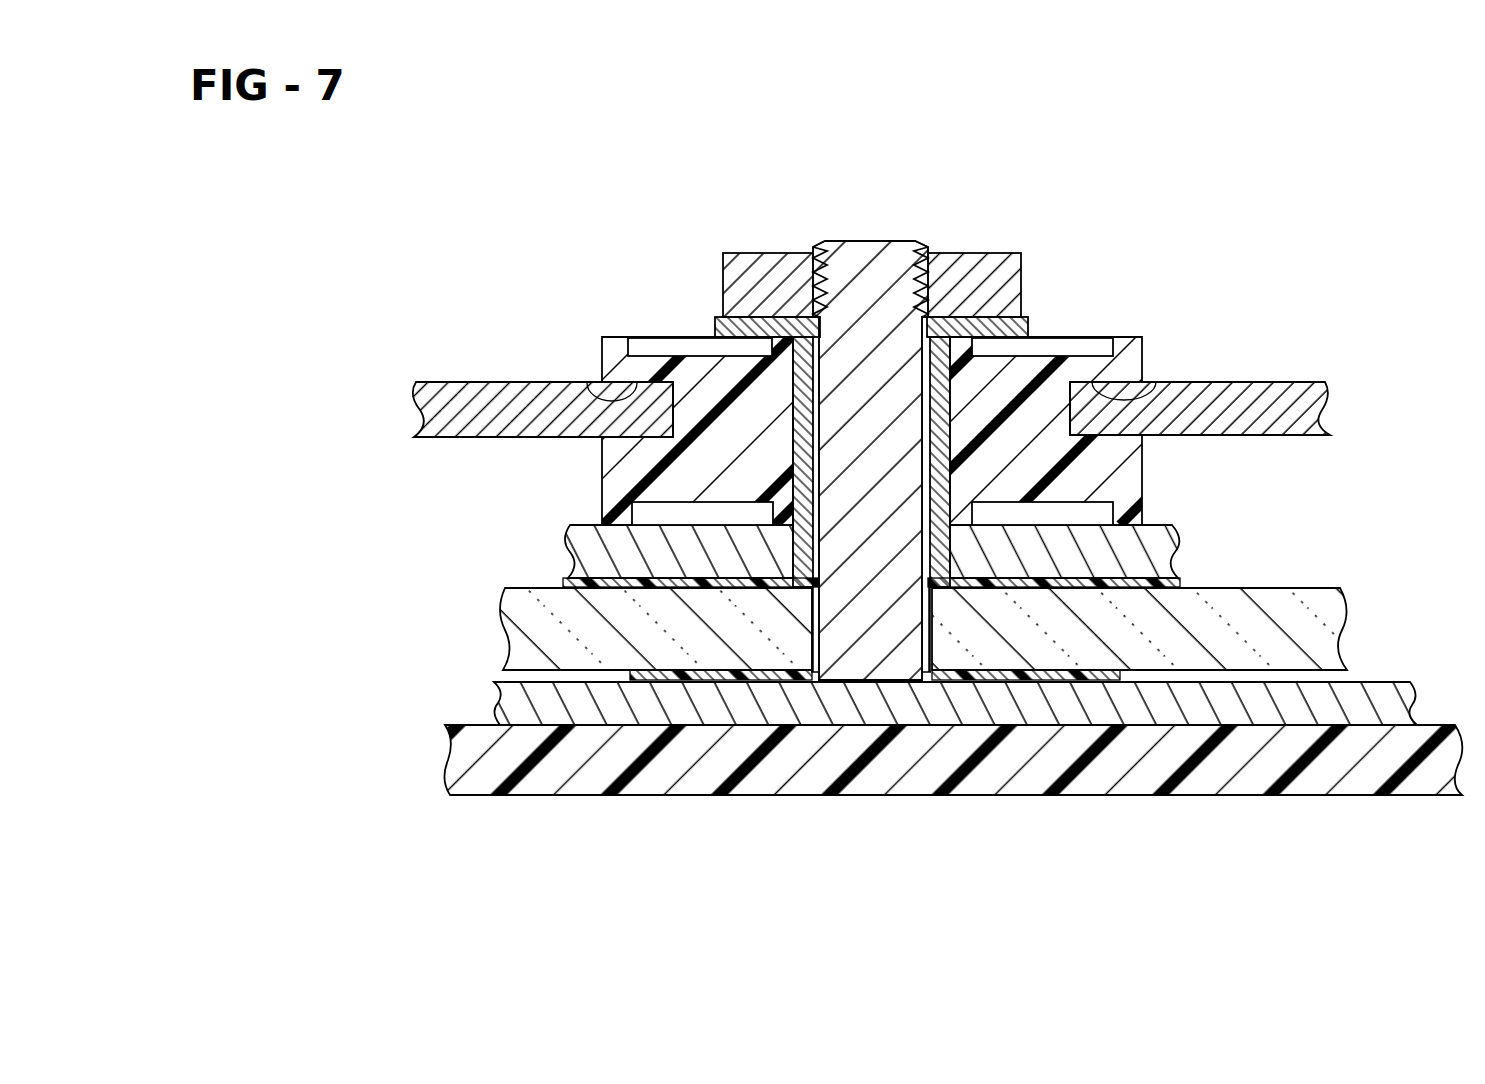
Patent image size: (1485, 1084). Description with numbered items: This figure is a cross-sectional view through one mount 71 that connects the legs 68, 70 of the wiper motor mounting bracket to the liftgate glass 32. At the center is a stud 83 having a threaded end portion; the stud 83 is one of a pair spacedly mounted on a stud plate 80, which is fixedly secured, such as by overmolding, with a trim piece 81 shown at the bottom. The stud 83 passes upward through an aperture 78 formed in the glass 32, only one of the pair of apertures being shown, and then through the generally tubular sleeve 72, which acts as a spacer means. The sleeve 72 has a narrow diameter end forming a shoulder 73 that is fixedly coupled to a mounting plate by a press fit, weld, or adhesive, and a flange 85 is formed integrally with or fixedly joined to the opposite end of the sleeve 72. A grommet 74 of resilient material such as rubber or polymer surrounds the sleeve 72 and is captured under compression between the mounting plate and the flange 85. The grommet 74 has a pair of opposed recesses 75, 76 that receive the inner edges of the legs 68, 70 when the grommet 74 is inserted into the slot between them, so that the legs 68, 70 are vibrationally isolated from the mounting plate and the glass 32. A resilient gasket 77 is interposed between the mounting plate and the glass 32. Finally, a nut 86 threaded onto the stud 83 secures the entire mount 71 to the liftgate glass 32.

The mount 71 is at (641, 290).
The nut 86 is at (753, 277).
The stud 83 is at (867, 255).
The flange 85 is at (955, 328).
The sleeve 72 is at (940, 373).
The leg 68 is at (480, 387).
The leg 70 is at (1277, 393).
The recess 75 is at (595, 383).
The recess 76 is at (1150, 383).
The grommet 74 is at (612, 498).
The resilient gasket 77 is at (600, 578).
The shoulder 73 is at (950, 545).
The liftgate glass 32 is at (503, 642).
The aperture 78 is at (922, 632).
The stud plate 80 is at (1123, 712).
The trim piece 81 is at (590, 783).